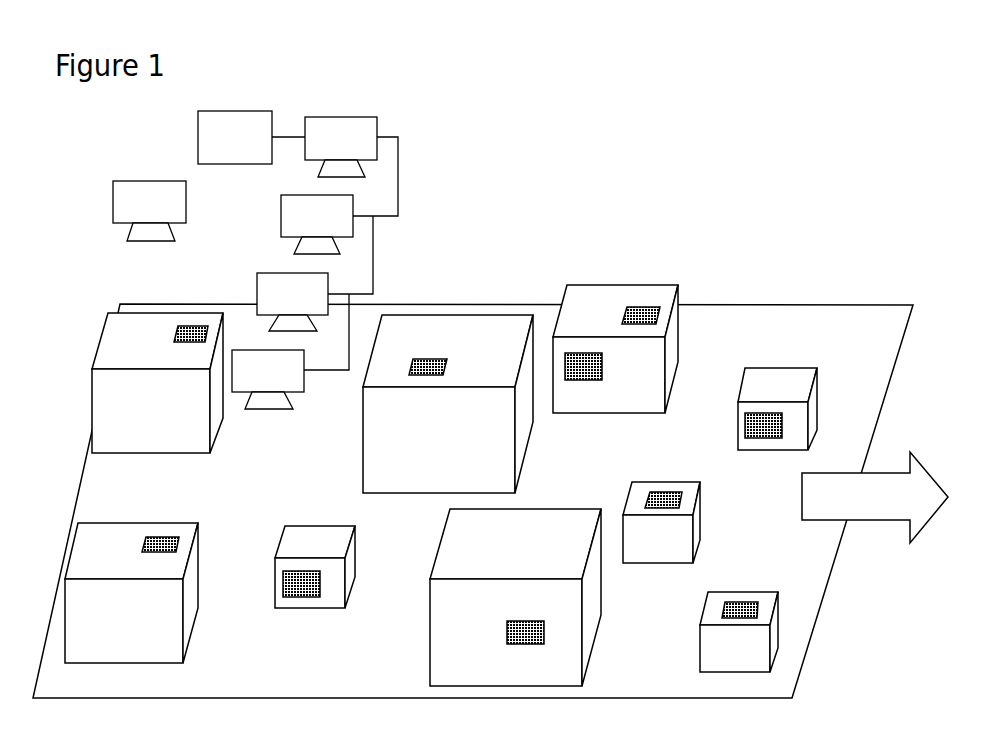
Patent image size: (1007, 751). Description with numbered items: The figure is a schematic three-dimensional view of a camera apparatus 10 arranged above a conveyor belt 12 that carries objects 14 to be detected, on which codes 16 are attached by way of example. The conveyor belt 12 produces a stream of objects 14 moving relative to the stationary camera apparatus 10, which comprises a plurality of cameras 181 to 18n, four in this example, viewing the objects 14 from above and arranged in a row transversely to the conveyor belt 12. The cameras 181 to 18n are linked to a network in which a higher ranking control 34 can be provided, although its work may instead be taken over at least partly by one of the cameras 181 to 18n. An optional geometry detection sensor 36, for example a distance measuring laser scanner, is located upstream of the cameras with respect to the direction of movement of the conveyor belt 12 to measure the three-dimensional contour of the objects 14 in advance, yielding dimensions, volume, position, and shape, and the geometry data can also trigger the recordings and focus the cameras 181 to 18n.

The camera apparatus 10 is at (490, 352).
The conveyor belt 12 is at (802, 305).
The object 14 is at (615, 314).
The code 16 is at (767, 430).
The camera 181 is at (330, 120).
The camera 18n is at (268, 417).
The higher ranking control 34 is at (235, 116).
The geometry detection sensor 36 is at (134, 184).